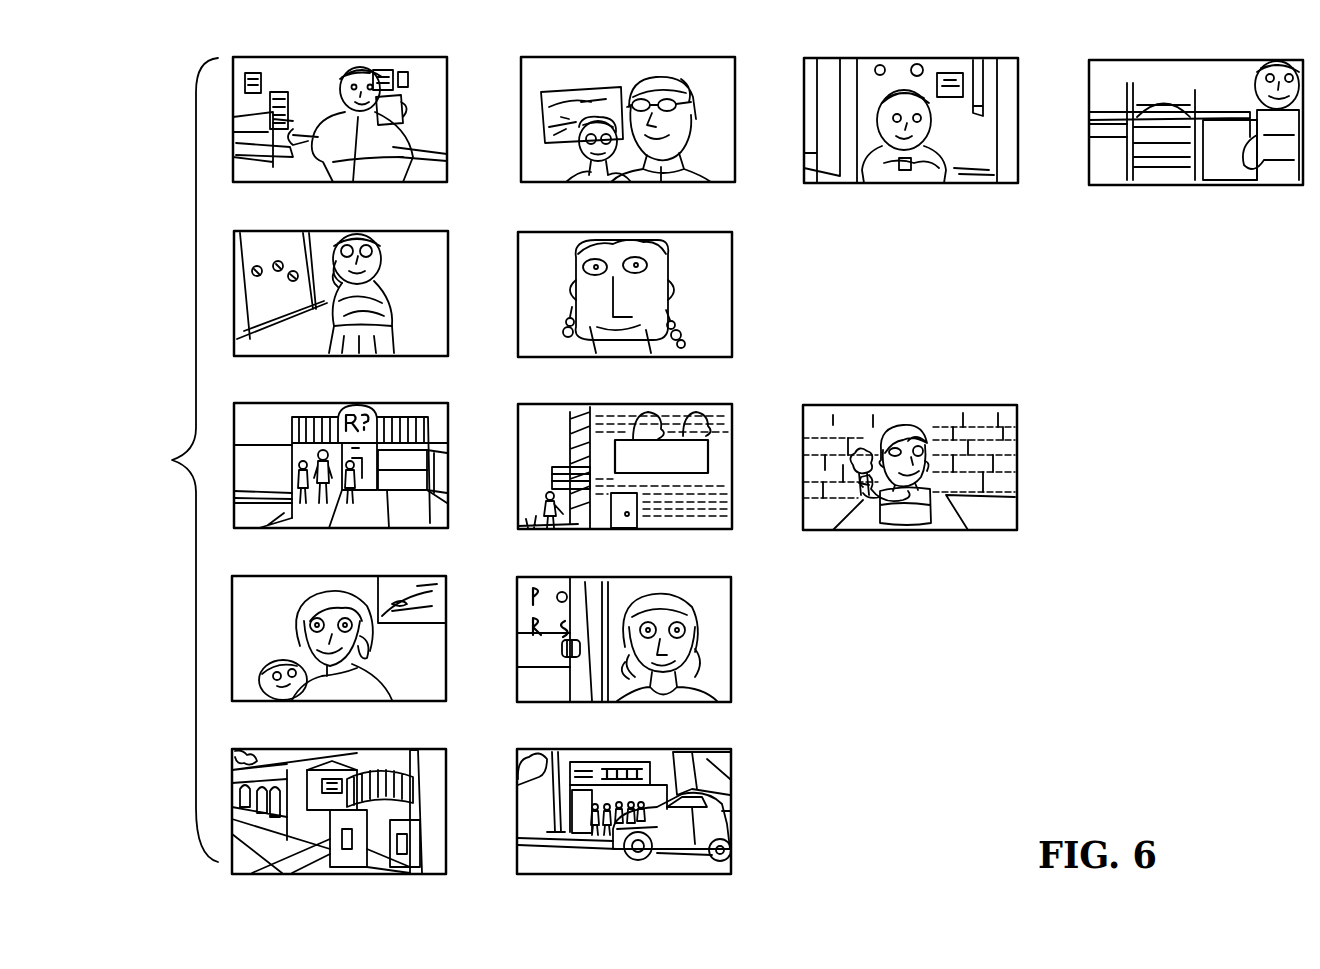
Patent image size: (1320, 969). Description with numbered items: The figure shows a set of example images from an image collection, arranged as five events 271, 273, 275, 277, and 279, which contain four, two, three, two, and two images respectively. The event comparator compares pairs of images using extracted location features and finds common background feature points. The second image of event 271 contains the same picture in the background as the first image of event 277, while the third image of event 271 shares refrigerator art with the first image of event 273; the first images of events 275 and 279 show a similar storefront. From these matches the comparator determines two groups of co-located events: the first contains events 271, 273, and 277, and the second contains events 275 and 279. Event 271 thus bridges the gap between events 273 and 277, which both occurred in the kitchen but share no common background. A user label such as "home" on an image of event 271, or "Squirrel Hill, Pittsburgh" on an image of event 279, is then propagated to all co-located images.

The event 271 is at (1163, 60).
The event 273 is at (602, 232).
The event 275 is at (897, 405).
The event 277 is at (602, 577).
The event 279 is at (602, 749).